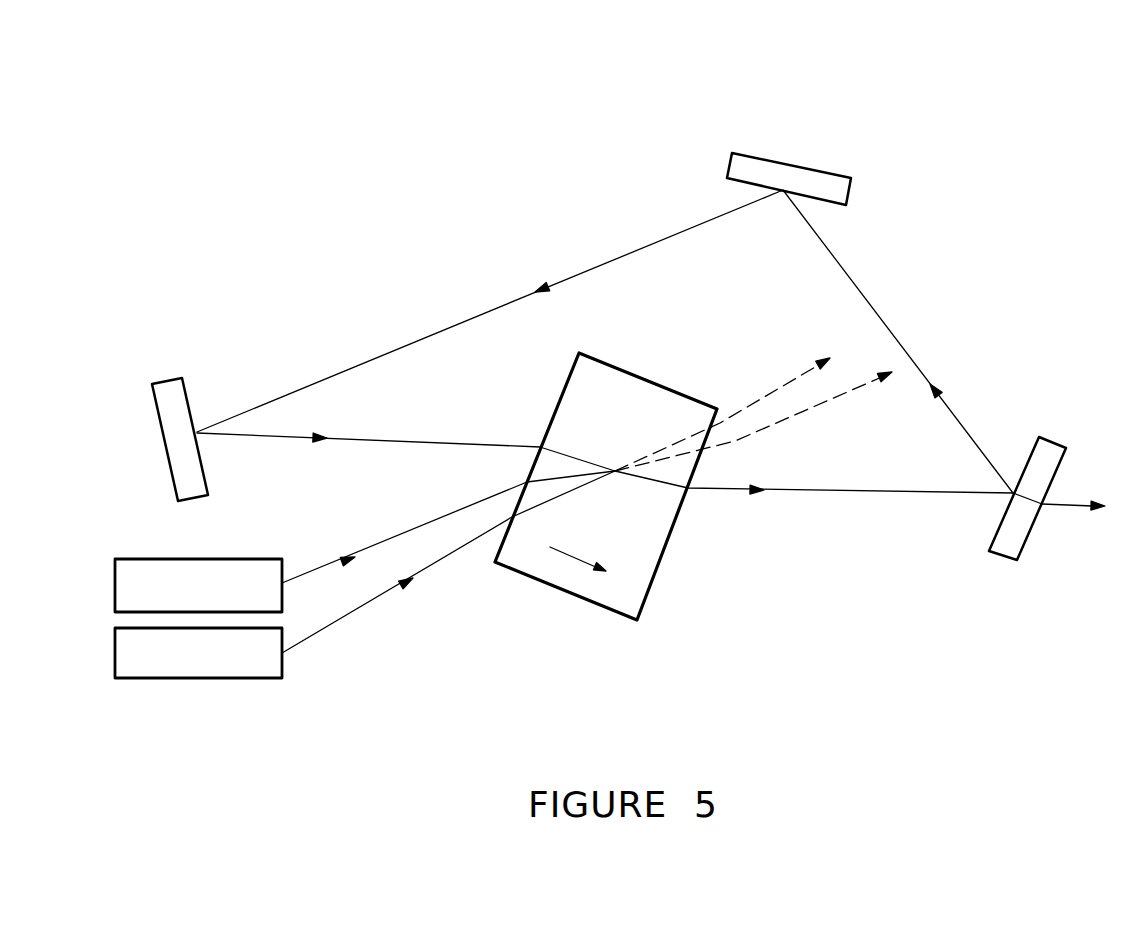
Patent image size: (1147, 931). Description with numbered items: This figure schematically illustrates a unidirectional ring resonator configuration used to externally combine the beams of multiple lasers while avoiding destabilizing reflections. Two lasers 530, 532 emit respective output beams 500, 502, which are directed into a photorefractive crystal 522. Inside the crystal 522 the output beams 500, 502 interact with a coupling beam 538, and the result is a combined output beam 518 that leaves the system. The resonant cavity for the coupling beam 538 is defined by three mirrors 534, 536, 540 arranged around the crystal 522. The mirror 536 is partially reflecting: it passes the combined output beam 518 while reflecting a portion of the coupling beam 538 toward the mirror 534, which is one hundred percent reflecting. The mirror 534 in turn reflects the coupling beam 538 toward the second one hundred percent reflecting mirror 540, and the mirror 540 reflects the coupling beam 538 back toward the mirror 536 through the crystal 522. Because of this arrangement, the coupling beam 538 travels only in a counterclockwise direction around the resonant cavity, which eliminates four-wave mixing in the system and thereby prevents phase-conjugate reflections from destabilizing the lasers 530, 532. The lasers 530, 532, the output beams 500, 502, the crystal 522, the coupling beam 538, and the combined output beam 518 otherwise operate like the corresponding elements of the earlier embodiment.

The output beam 500 is at (378, 543).
The output beam 502 is at (383, 597).
The combined output beam 518 is at (1080, 498).
The photorefractive crystal 522 is at (673, 540).
The laser 530 is at (237, 558).
The laser 532 is at (212, 678).
The mirror 534 is at (737, 151).
The mirror 536 is at (1033, 533).
The coupling beam 538 is at (453, 442).
The mirror 540 is at (158, 412).